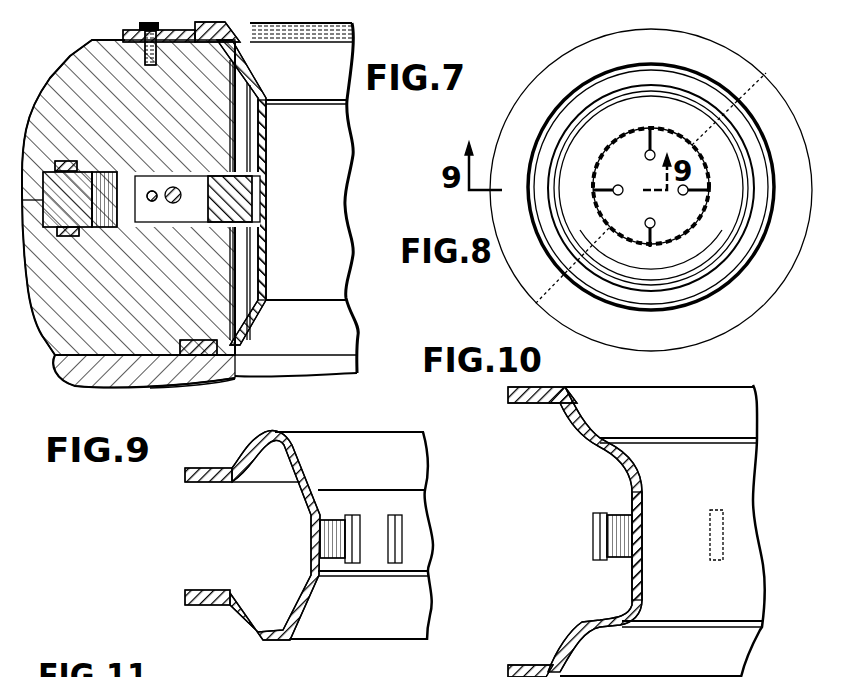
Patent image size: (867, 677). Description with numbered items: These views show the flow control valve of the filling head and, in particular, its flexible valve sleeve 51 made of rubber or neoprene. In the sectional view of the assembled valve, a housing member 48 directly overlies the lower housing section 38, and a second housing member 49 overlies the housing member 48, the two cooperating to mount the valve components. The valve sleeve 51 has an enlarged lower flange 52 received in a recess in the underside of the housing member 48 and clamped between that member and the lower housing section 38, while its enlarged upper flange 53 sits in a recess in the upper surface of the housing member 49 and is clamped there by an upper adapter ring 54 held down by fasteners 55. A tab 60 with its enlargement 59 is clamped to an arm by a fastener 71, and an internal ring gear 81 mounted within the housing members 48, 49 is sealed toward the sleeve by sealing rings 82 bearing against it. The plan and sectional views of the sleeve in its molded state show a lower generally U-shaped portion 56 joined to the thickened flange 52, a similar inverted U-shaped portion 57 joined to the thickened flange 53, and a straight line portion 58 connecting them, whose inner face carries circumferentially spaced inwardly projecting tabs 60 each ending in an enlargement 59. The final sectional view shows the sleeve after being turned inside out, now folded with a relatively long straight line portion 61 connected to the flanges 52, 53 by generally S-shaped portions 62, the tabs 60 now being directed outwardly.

In FIG. 7, the lower housing section 38 is at (185, 382).
In FIG. 7, the housing member 48 is at (52, 338).
In FIG. 7, the second housing member 49 is at (67, 72).
In FIG. 7, the valve sleeve 51 is at (266, 140).
In FIG. 8, the valve sleeve 51 is at (779, 98).
In FIG. 10, the valve sleeve 51 is at (765, 432).
In FIG. 9, the valve sleeve 51 is at (320, 440).
In FIG. 7, the lower flange 52 is at (200, 340).
In FIG. 8, the lower flange 52 is at (520, 114).
In FIG. 10, the lower flange 52 is at (528, 664).
In FIG. 9, the lower flange 52 is at (200, 610).
In FIG. 7, the upper flange 53 is at (223, 43).
In FIG. 8, the upper flange 53 is at (762, 302).
In FIG. 10, the upper flange 53 is at (527, 403).
In FIG. 9, the upper flange 53 is at (210, 468).
In FIG. 7, the upper adapter ring 54 is at (131, 42).
In FIG. 7, the fasteners 55 is at (150, 65).
In FIG. 9, the lower U-shaped portion 56 is at (300, 644).
In FIG. 9, the inverted U-shaped portion 57 is at (292, 440).
In FIG. 8, the straight line portion 58 is at (608, 204).
In FIG. 9, the straight line portion 58 is at (320, 523).
In FIG. 7, the enlargement 59 is at (200, 206).
In FIG. 8, the enlargement 59 is at (647, 160).
In FIG. 10, the enlargement 59 is at (593, 531).
In FIG. 9, the enlargement 59 is at (402, 537).
In FIG. 7, the tabs 60 is at (258, 200).
In FIG. 8, the tabs 60 is at (604, 185).
In FIG. 10, the tabs 60 is at (612, 560).
In FIG. 9, the tabs 60 is at (334, 520).
In FIG. 7, the long straight line portion 61 is at (268, 255).
In FIG. 10, the long straight line portion 61 is at (645, 497).
In FIG. 10, the S-shaped portion 62 is at (583, 425).
In FIG. 7, the fastener 71 is at (175, 210).
In FIG. 7, the internal ring gear 81 is at (100, 230).
In FIG. 7, the sealing rings 82 is at (77, 158).